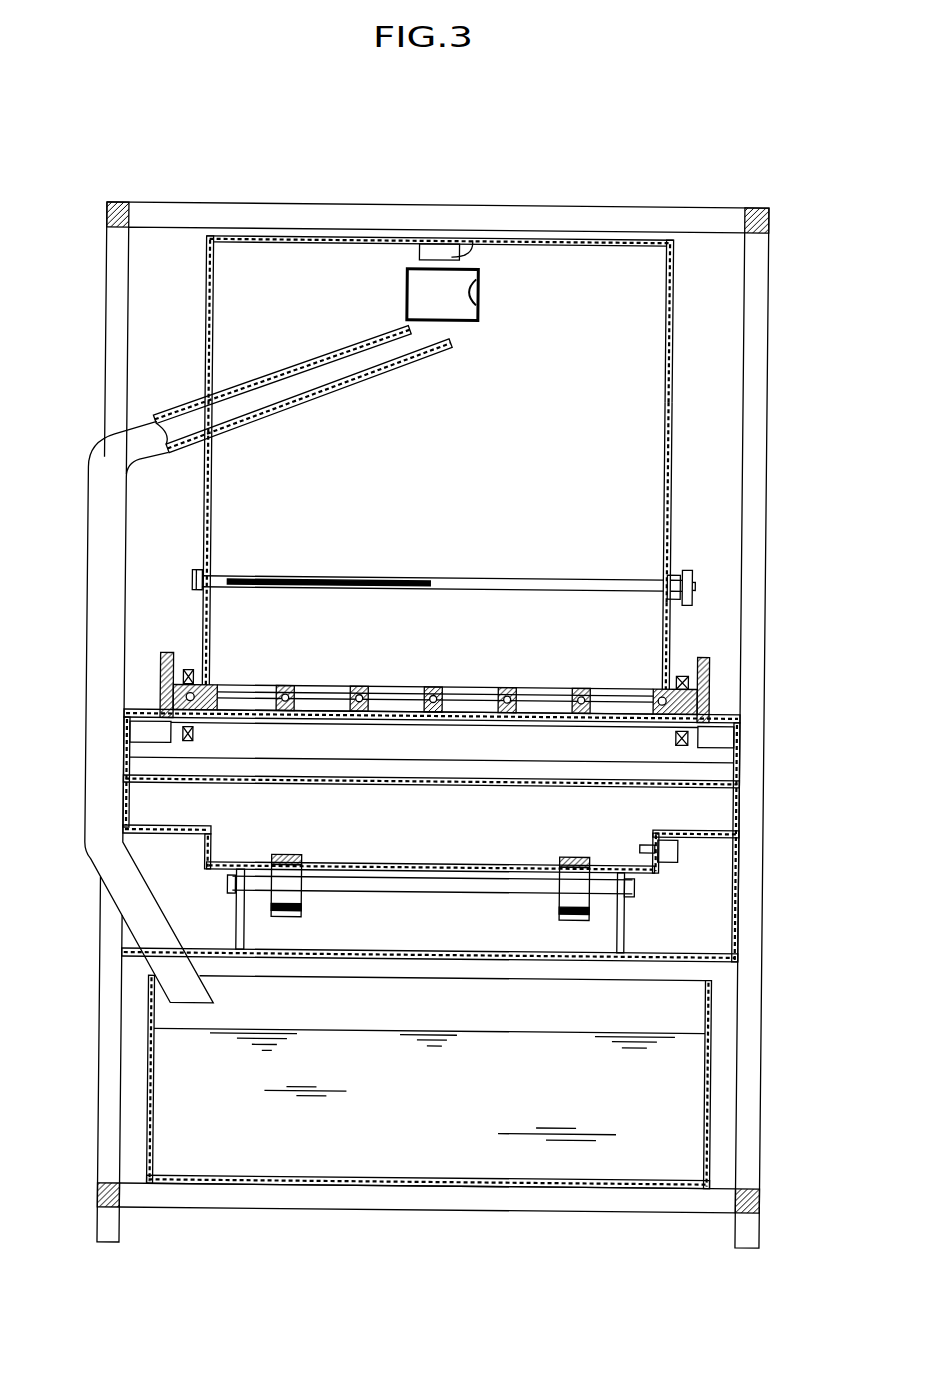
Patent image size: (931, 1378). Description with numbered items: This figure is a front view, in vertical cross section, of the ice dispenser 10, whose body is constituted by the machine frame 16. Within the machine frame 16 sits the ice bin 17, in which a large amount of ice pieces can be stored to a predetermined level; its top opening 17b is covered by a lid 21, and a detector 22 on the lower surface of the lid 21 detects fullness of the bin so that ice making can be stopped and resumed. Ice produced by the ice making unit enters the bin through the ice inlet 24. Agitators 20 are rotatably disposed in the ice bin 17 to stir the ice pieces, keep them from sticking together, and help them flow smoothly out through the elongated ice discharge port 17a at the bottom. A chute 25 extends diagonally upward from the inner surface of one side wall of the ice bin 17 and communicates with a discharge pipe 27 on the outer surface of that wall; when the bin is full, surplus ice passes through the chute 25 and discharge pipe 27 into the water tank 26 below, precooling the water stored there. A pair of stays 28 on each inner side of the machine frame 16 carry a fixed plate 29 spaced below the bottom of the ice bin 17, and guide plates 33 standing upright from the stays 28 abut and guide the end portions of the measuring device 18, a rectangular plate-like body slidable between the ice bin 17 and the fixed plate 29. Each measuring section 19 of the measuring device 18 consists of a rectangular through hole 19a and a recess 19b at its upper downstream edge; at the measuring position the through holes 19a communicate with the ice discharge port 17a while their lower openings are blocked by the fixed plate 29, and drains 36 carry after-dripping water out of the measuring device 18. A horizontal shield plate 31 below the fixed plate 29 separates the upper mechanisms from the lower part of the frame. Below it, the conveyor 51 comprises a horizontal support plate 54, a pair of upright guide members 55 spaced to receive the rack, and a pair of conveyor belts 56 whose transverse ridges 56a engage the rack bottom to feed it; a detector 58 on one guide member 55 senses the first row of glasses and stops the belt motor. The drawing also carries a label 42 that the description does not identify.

The ice dispenser 10 is at (333, 187).
The machine frame 16 is at (195, 205).
The ice bin 17 is at (668, 345).
The ice discharge port 17a is at (660, 688).
The top opening 17b is at (660, 256).
The measuring device 18 is at (432, 686).
The measuring section 19 is at (327, 688).
The through hole 19a is at (339, 689).
The recess 19b is at (299, 686).
The agitator 20 is at (453, 578).
The lid 21 is at (590, 238).
The detector 22 is at (455, 245).
The ice inlet 24 is at (474, 305).
The chute 25 is at (342, 384).
The water tank 26 is at (711, 1083).
The discharge pipe 27 is at (95, 562).
The stay 28 is at (150, 743).
The fixed plate 29 is at (389, 722).
The shield plate 31 is at (506, 782).
The guide plate 33 is at (160, 684).
The drain 36 is at (225, 692).
The bearing block 42 is at (188, 672).
The conveyor 51 is at (339, 893).
The support plate 54 is at (474, 865).
The guide member 55 is at (209, 860).
The conveyor belt 56 is at (296, 862).
The transverse ridge 56a is at (293, 857).
The detector 58 is at (669, 855).